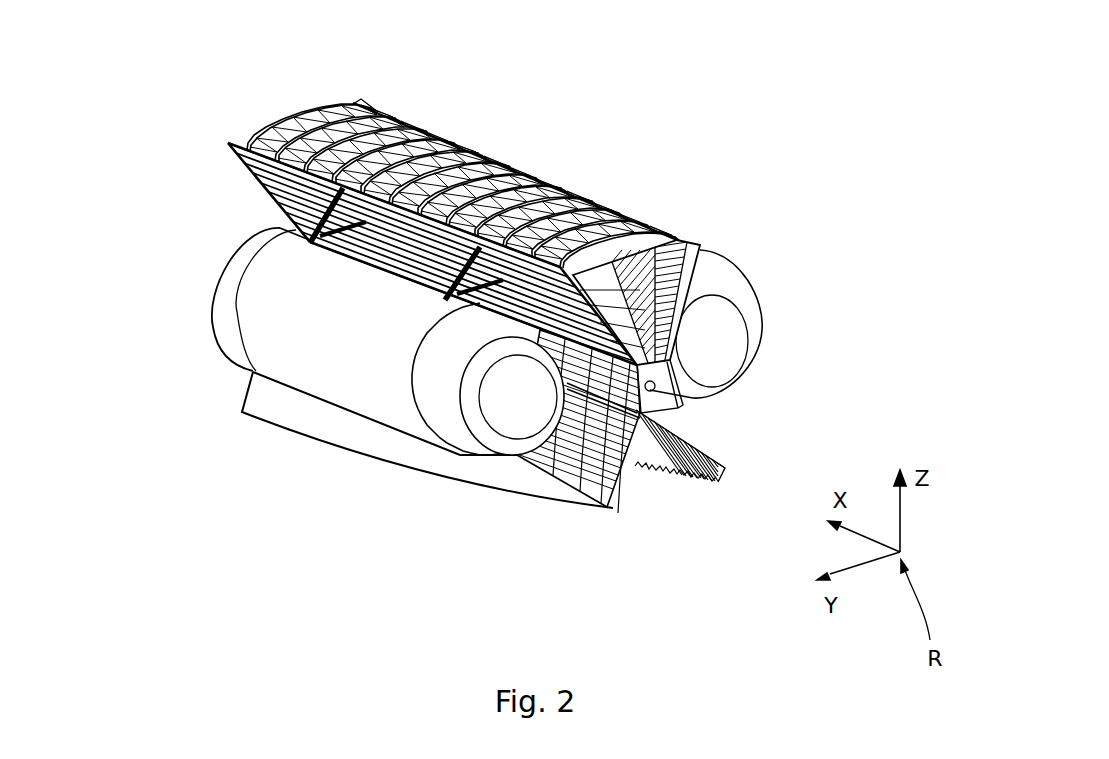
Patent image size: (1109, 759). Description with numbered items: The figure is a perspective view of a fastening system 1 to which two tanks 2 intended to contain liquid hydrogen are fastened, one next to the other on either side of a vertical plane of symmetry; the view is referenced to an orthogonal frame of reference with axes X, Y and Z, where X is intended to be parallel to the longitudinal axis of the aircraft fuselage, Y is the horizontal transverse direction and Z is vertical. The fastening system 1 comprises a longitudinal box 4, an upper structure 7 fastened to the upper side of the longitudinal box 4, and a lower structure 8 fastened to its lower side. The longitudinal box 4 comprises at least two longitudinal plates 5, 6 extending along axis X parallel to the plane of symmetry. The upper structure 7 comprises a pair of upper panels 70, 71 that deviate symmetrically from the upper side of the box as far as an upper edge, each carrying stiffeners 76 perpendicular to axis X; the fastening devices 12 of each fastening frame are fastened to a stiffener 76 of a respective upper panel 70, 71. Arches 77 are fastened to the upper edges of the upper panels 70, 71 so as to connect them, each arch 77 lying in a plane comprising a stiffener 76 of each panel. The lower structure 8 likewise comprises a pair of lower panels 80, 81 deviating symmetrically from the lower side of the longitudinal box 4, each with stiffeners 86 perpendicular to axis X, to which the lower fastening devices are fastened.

The fastening system 1 is at (452, 580).
The tank 2 is at (262, 290).
The longitudinal box 4 is at (567, 383).
The longitudinal plate 5 is at (635, 425).
The longitudinal plate 6 is at (677, 392).
The upper structure 7 is at (667, 190).
The lower structure 8 is at (725, 500).
The fastening device 12 is at (310, 238).
The upper panel 70 is at (238, 147).
The upper panel 71 is at (407, 130).
The stiffener 76 is at (710, 265).
The arch 77 is at (318, 117).
The lower panel 80 is at (617, 510).
The lower panel 81 is at (727, 473).
The stiffener 86 is at (677, 472).